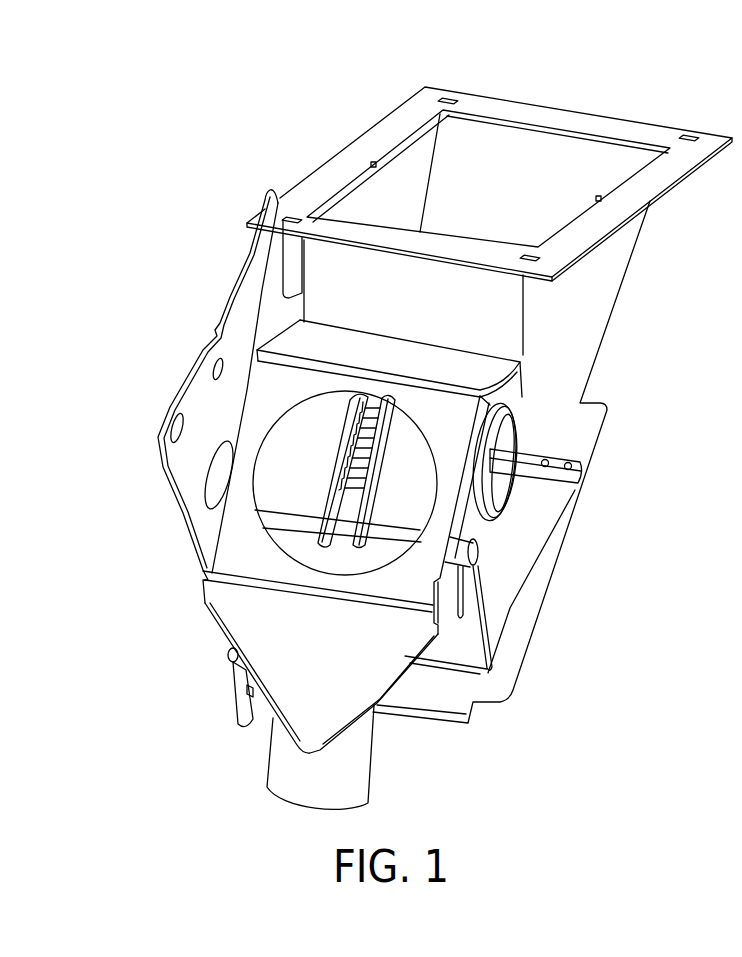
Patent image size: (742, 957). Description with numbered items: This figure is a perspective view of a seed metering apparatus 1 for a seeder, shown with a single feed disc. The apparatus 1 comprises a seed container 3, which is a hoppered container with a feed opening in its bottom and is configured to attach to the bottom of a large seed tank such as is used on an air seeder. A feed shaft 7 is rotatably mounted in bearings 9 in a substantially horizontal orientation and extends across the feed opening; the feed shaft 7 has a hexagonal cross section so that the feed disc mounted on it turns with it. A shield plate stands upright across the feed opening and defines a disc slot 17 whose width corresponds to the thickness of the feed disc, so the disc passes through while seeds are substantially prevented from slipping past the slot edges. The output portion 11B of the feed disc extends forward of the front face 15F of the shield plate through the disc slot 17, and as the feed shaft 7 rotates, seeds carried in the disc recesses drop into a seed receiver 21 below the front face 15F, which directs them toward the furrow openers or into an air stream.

The seed metering apparatus 1 is at (689, 101).
The seed container 3 is at (628, 272).
The feed shaft 7 is at (552, 502).
The bearings 9 is at (502, 437).
The output portion 11B is at (363, 412).
The front face 15F is at (301, 460).
The disc slot 17 is at (362, 410).
The seed receiver 21 is at (370, 765).